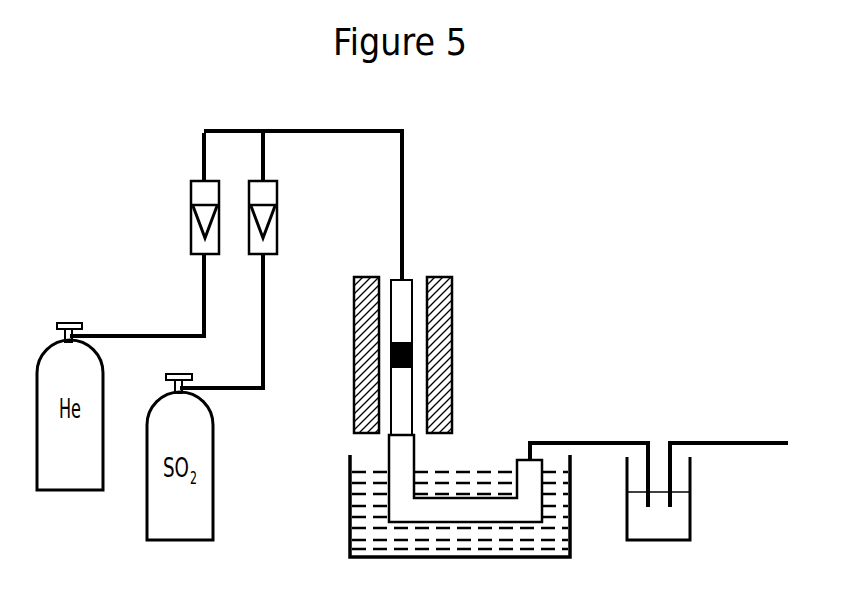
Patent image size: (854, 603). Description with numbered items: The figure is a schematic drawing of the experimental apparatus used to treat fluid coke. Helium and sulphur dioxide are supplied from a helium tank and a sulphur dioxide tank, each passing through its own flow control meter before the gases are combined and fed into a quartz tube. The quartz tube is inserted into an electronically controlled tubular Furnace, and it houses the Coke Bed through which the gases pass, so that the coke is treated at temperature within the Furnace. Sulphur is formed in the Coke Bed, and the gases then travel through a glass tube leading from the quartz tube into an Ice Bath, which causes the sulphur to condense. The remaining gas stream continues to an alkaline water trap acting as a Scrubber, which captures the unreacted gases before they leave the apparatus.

The electronically controlled tubular furnace Furnace is at (450, 302).
The coke bed Coke Bed is at (413, 355).
The ice bath Ice Bath is at (457, 467).
The alkaline water trap/scrubber Scrubber is at (711, 471).